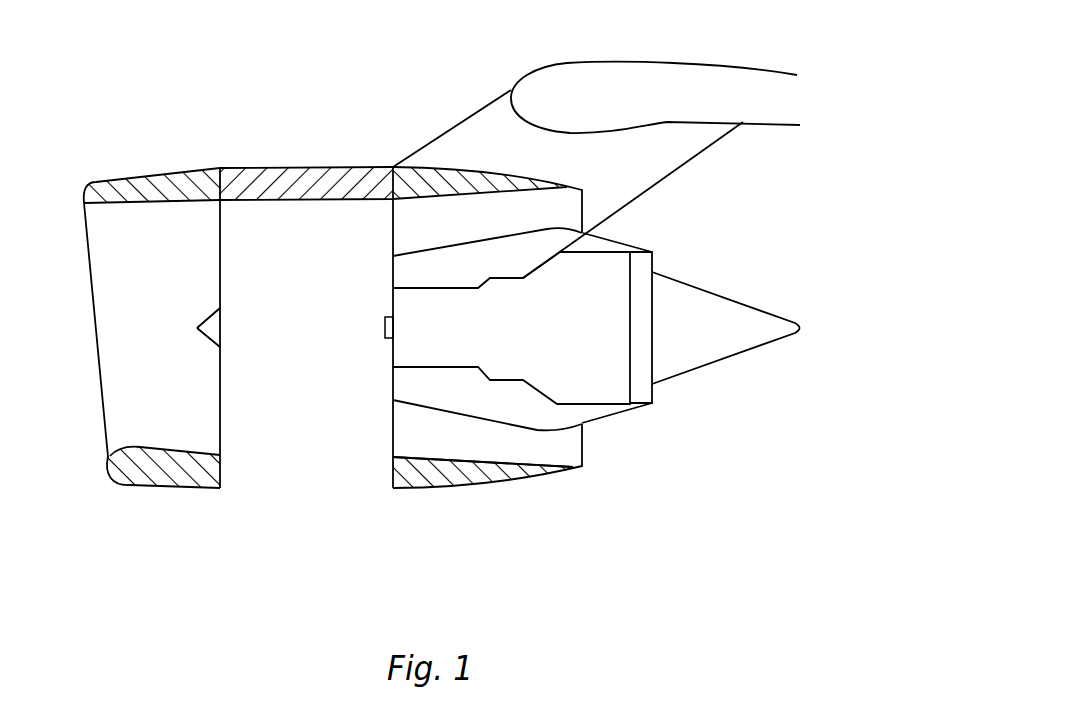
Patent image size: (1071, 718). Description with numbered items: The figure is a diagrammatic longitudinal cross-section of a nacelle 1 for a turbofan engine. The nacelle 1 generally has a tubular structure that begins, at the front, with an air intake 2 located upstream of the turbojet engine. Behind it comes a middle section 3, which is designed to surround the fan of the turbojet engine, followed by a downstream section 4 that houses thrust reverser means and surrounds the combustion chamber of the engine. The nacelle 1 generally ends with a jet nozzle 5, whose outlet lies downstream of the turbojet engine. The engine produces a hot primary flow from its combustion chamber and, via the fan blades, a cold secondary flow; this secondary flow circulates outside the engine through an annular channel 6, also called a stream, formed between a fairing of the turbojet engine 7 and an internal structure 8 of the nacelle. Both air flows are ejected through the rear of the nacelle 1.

The nacelle 1 is at (393, 87).
The air intake 2 is at (71, 264).
The middle section 3 is at (282, 183).
The downstream section 4 is at (487, 483).
The jet nozzle 5 is at (638, 390).
The annular channel 6 is at (420, 437).
The fairing of the turbojet engine 7 is at (483, 462).
The internal structure of the nacelle 8 is at (518, 428).